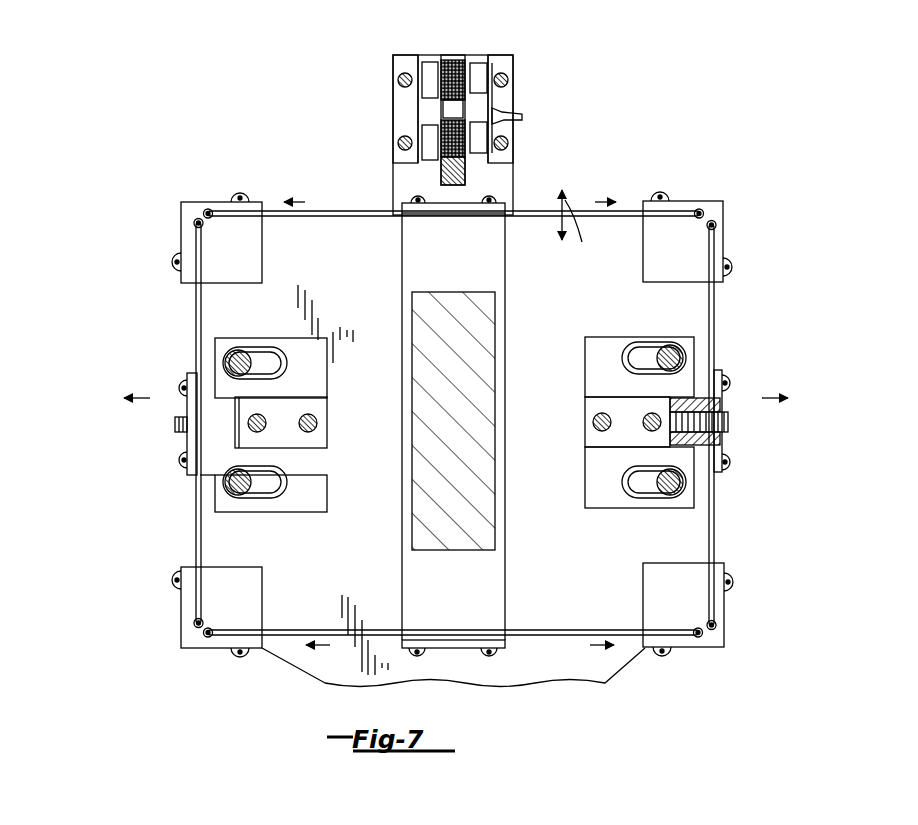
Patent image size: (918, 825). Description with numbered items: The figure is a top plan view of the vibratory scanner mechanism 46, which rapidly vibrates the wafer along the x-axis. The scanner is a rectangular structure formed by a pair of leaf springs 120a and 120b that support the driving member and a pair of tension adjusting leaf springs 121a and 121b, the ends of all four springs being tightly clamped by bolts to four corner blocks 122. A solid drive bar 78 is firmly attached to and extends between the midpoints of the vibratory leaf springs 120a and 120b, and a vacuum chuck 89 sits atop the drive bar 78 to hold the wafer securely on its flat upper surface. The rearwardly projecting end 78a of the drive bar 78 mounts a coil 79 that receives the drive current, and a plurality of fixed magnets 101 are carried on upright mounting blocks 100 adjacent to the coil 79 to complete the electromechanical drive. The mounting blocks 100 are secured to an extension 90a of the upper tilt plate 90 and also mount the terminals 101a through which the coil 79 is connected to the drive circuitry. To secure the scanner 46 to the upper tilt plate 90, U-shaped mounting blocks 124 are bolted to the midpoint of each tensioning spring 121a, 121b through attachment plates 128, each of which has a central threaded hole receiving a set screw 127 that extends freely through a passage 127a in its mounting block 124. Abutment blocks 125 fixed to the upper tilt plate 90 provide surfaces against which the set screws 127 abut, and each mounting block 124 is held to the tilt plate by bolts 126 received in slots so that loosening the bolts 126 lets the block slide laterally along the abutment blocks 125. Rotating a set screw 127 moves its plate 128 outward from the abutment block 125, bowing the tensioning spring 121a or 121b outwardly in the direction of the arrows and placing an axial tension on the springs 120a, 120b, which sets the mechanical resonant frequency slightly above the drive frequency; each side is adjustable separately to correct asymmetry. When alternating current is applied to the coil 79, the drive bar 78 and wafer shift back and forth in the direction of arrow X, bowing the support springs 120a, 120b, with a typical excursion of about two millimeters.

The vibratory scanner mechanism 46 is at (124, 183).
The drive bar 78 is at (474, 605).
The rearwardly projecting end of the drive bar 78a is at (455, 212).
The coil 79 is at (457, 63).
The vacuum chuck 89 is at (425, 380).
The upper tilt plate 90 is at (384, 583).
The extension of the upper tilt plate 90a is at (405, 177).
The upright mounting blocks 100 is at (403, 63).
The fixed magnets 101 is at (480, 72).
The terminals 101a is at (505, 118).
The leaf spring 120a is at (367, 220).
The leaf spring 120b is at (545, 630).
The tension adjusting leaf spring 121a is at (715, 532).
The tension adjusting leaf spring 121b is at (196, 532).
The corner blocks 122 is at (203, 200).
The U-shaped mounting blocks 124 is at (600, 365).
The abutment blocks 125 is at (600, 407).
The bolts 126 is at (250, 327).
The set screw 127 is at (175, 425).
The passage 127a is at (702, 447).
The attachment plates 128 is at (190, 468).